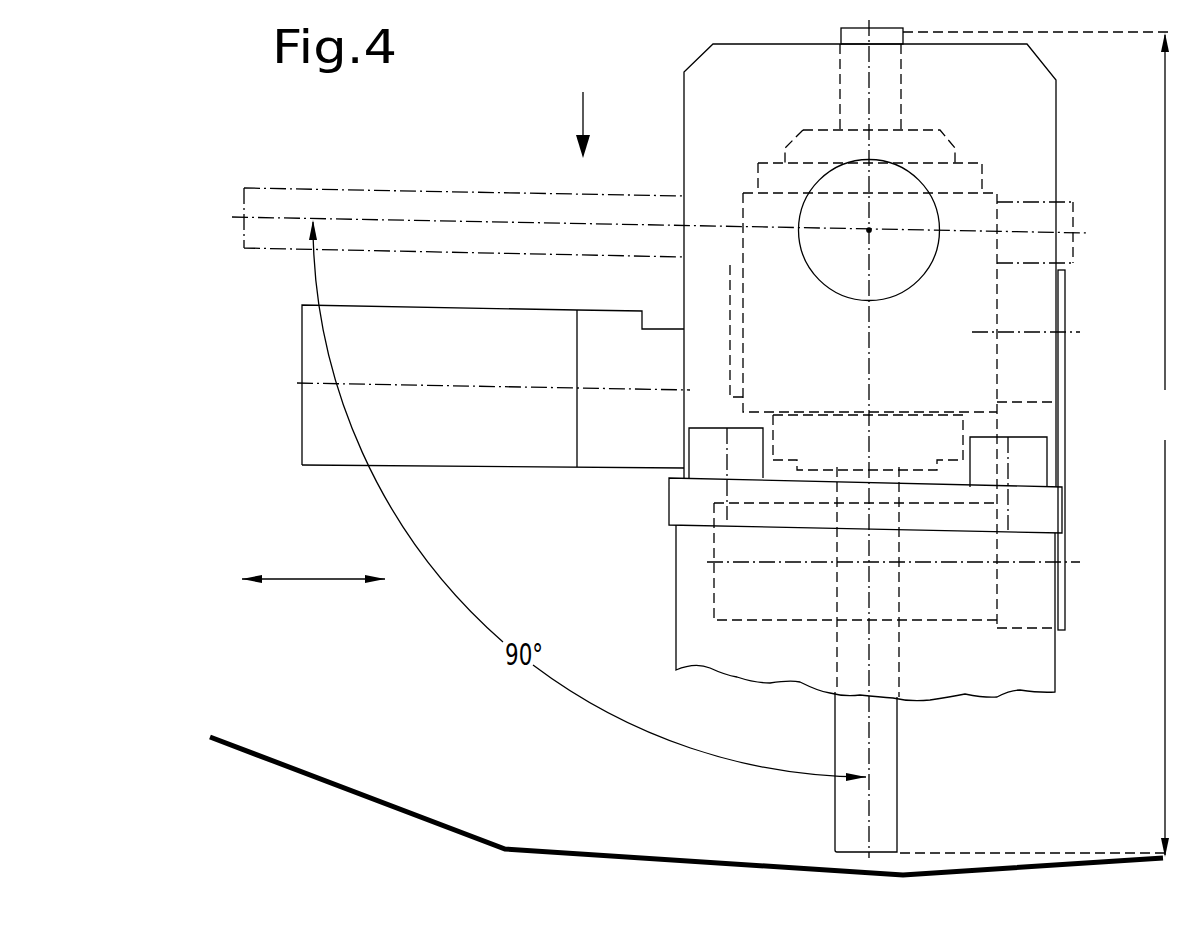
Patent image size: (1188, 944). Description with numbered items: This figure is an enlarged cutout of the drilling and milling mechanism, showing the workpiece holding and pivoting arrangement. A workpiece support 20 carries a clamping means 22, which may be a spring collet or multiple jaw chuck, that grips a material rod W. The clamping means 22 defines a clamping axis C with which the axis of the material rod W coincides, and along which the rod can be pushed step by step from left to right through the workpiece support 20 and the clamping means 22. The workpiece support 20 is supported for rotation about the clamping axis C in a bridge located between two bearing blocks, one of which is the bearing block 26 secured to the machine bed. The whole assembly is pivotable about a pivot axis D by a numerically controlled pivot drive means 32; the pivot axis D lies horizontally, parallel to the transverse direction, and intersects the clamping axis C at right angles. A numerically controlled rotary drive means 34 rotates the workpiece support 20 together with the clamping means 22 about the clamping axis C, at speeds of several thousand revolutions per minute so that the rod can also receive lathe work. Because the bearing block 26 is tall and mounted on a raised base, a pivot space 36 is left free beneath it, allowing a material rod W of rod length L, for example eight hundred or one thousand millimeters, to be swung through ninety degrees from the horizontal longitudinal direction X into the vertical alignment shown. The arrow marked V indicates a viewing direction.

The workpiece support 20 is at (755, 213).
The clamping means 22 is at (808, 148).
The bearing block 26 is at (718, 112).
The pivot drive means 32 is at (513, 445).
The rotary drive means 34 is at (725, 582).
The pivot space 36 is at (383, 724).
The material rod W is at (415, 192).
The clamping axis C is at (511, 222).
The pivot axis D is at (869, 230).
The rod length L is at (1036, 444).
The longitudinal direction X is at (313, 563).
The view direction V is at (593, 81).